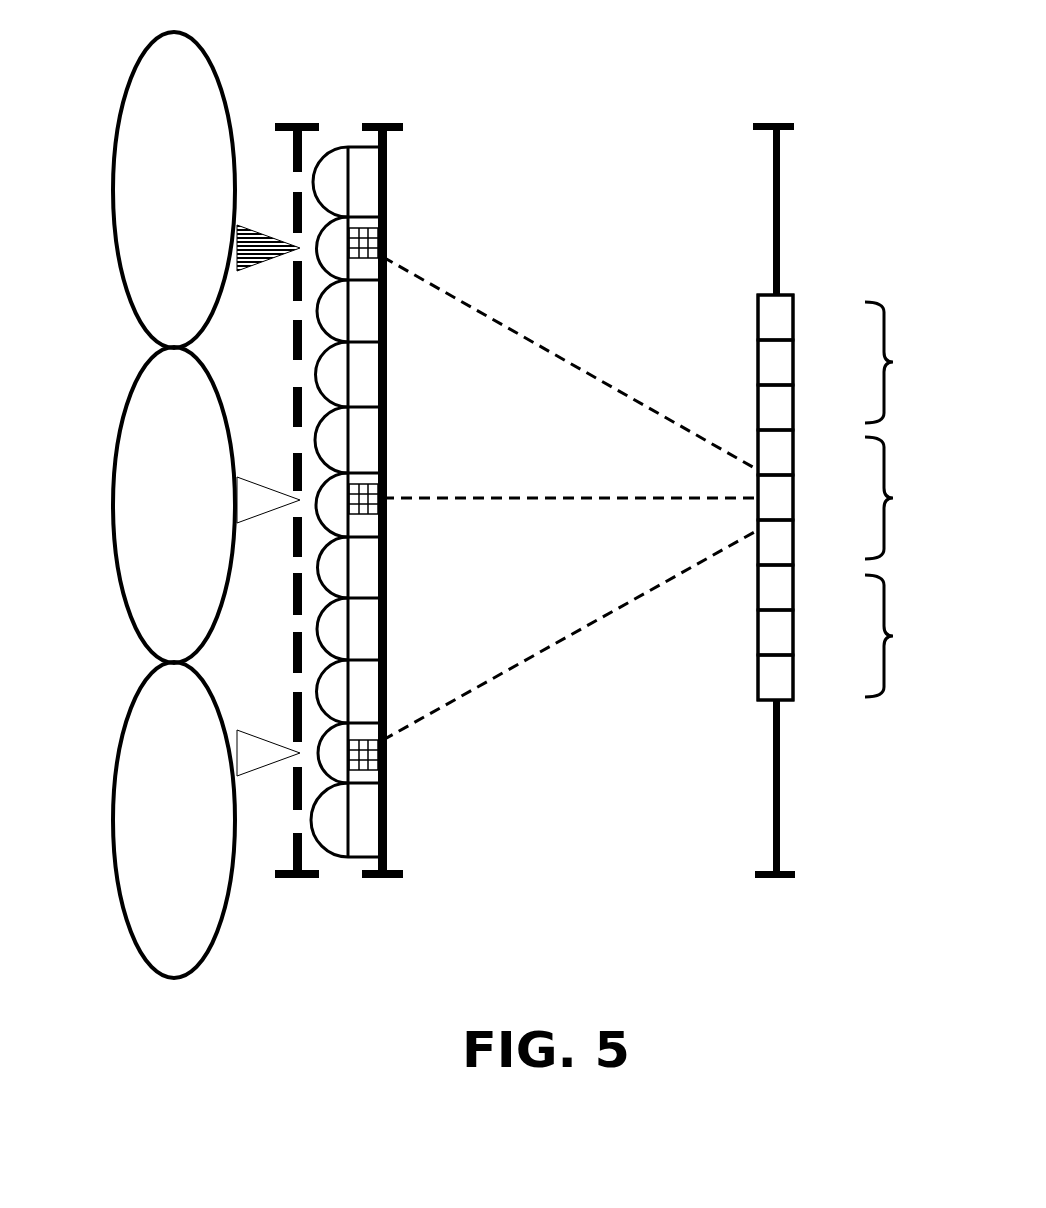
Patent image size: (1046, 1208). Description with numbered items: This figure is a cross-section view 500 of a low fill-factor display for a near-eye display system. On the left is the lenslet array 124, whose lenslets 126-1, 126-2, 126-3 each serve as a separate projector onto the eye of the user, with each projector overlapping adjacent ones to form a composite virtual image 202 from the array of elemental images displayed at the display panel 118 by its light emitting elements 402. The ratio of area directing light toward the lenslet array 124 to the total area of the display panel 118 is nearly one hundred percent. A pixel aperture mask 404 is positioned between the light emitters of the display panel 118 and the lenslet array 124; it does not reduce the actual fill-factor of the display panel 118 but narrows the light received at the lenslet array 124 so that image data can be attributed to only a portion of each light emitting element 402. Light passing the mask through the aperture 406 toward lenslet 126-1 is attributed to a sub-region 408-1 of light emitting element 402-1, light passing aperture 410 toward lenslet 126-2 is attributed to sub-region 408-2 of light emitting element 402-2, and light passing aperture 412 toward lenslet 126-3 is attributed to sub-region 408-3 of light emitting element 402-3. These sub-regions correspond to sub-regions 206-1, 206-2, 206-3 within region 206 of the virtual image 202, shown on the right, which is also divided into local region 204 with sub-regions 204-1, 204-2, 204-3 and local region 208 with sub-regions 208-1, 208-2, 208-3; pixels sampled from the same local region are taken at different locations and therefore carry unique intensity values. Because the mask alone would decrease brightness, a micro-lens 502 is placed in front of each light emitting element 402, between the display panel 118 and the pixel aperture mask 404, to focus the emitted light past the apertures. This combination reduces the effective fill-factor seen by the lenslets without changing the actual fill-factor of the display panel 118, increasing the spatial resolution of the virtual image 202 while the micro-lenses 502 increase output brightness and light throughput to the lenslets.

The cross-section view 500 is at (840, 55).
The lenslet array 124 is at (128, 82).
The lenslet 126-1 is at (155, 197).
The lenslet 126-2 is at (155, 515).
The lenslet 126-3 is at (155, 830).
The pixel aperture mask 406 is at (291, 243).
The aperture 410 is at (290, 494).
The aperture 412 is at (289, 746).
The pixel aperture mask 404 is at (299, 900).
The display panel 118 is at (386, 900).
The light emitting elements 402 is at (534, 460).
The micro-lens 502 is at (335, 187).
The light emitting element 402-1 is at (537, 343).
The light emitting element 402-2 is at (537, 505).
The light emitting element 402-3 is at (538, 659).
The sub-region 408-1 is at (372, 247).
The sub-region 408-2 is at (372, 496).
The sub-region 408-3 is at (372, 755).
The virtual image 202 is at (857, 528).
The local region 204 is at (893, 362).
The sub-region 204-1 is at (775, 330).
The sub-region 204-2 is at (775, 372).
The virtual image pixel 204-3 is at (775, 416).
The region 206 is at (893, 498).
The sub-region 206-1 is at (775, 465).
The sub-region 206-2 is at (775, 510).
The sub-region 206-3 is at (775, 550).
The third virtual image region 208 is at (893, 636).
The sub-region 208-1 is at (775, 603).
The virtual image pixel 208-2 is at (775, 646).
The virtual image pixel 208-3 is at (775, 690).